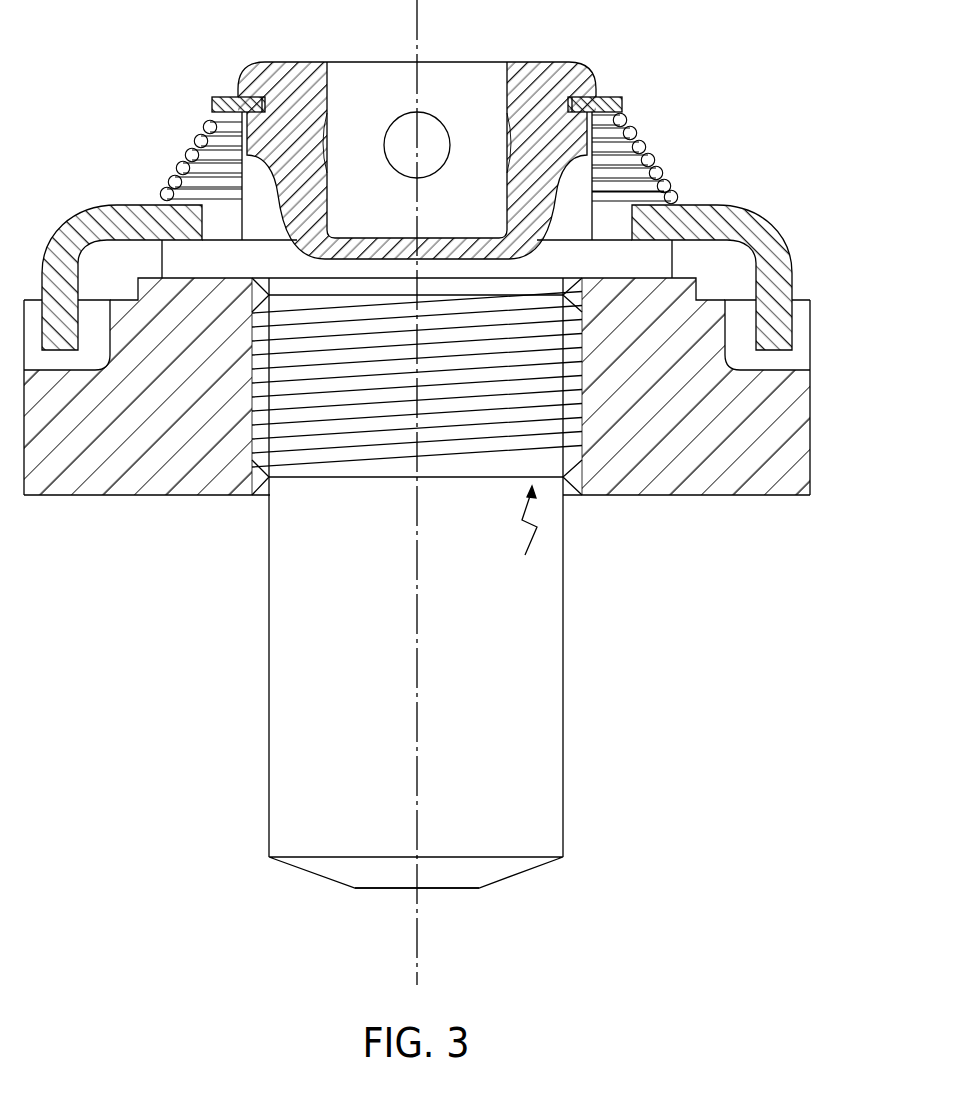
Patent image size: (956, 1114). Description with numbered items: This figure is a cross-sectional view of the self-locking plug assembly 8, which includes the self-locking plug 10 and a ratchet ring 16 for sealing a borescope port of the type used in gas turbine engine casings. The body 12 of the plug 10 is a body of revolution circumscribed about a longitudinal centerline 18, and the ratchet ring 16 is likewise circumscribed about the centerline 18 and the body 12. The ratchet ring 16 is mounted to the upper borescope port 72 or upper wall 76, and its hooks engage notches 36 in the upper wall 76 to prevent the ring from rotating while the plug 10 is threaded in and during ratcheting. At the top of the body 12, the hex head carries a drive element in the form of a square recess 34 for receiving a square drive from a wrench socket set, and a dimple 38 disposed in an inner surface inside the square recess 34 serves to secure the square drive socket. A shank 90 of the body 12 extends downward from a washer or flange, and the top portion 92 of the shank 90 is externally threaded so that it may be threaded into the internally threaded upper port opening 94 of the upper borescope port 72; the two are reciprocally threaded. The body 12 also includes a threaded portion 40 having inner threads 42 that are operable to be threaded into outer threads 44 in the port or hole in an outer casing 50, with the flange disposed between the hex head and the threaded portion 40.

The self-locking plug assembly 8 is at (278, 918).
The self-locking plug 10 is at (565, 595).
The body 12 is at (560, 62).
The ratchet ring 16 is at (717, 204).
The longitudinal centerline 18 is at (417, 683).
The square recess 34 is at (507, 103).
The notches 36 is at (810, 330).
The dimple 38 is at (402, 130).
The threaded portion 40 is at (530, 535).
The inner threads 42 is at (377, 465).
The outer threads 44 is at (270, 492).
The outer casing 50 is at (742, 497).
The upper borescope port 72 is at (598, 277).
The upper wall 76 is at (810, 430).
The shank 90 is at (565, 767).
The top portion 92 is at (465, 465).
The upper port opening 94 is at (252, 429).